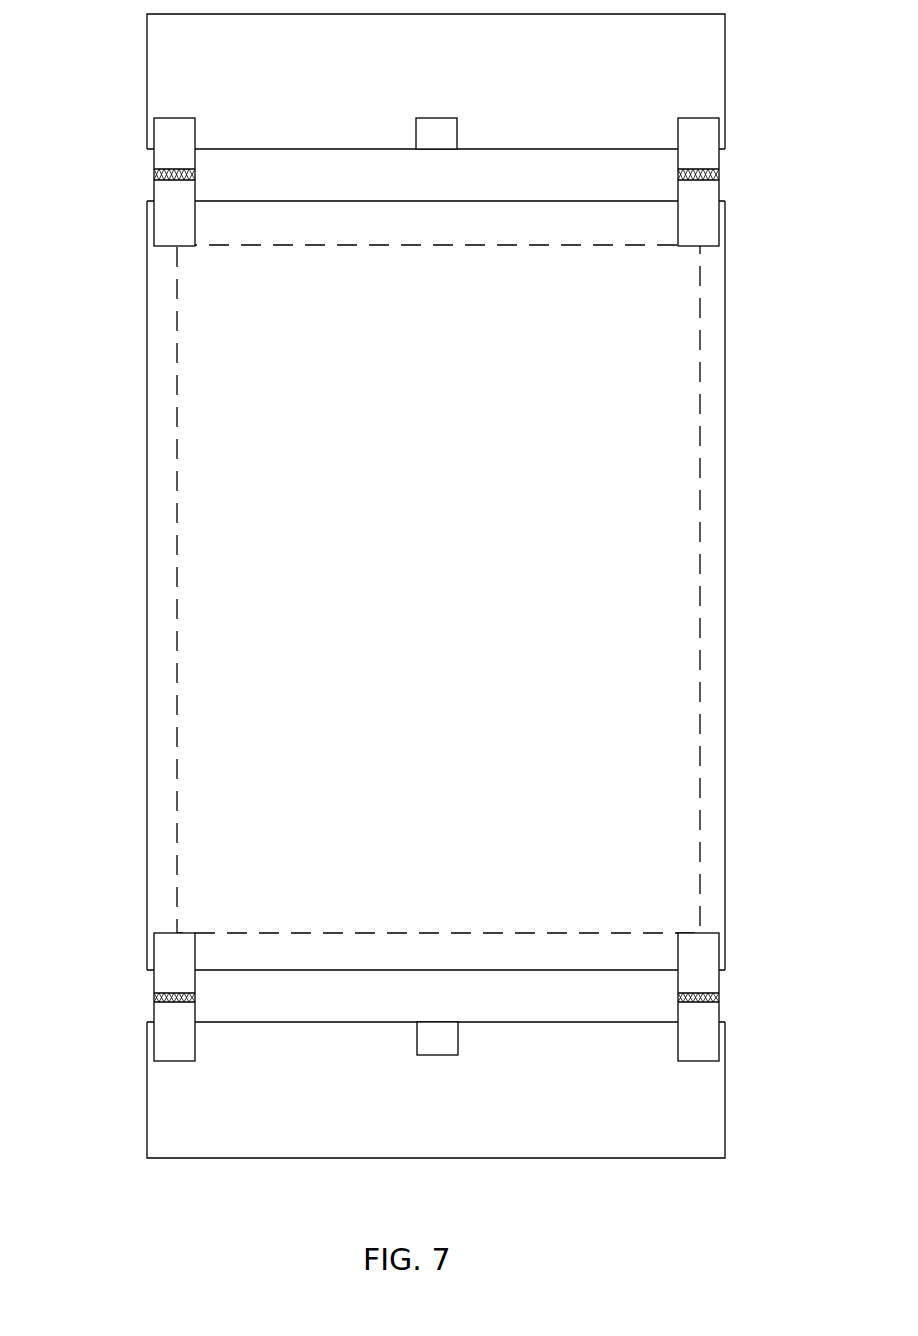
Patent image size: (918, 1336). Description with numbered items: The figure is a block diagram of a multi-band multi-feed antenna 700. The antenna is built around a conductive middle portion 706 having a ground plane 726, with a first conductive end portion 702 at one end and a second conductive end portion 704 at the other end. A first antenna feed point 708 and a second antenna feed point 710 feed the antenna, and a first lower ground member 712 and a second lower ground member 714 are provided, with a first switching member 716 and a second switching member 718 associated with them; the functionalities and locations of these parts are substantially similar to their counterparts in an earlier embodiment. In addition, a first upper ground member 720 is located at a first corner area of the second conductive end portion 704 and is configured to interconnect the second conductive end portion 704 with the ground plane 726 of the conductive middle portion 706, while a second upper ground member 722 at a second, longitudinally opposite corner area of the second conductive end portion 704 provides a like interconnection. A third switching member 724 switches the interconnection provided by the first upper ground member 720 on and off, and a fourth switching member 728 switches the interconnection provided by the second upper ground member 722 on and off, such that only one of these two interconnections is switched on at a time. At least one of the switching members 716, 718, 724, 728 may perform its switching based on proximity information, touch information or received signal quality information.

The multi-band multi-feed antenna 700 is at (99, 576).
The first conductive end portion 702 is at (147, 1145).
The second conductive end portion 704 is at (147, 55).
The conductive middle portion 706 is at (147, 328).
The first antenna feed point 708 is at (435, 1022).
The second antenna feed point 710 is at (428, 150).
The first lower ground member 712 is at (154, 980).
The second lower ground member 714 is at (719, 980).
The first switching member 716 is at (196, 1000).
The second switching member 718 is at (678, 993).
The first upper ground member 720 is at (154, 168).
The second upper ground member 722 is at (719, 164).
The third switching member 724 is at (196, 182).
The ground plane 726 is at (178, 430).
The fourth switching member 728 is at (678, 176).